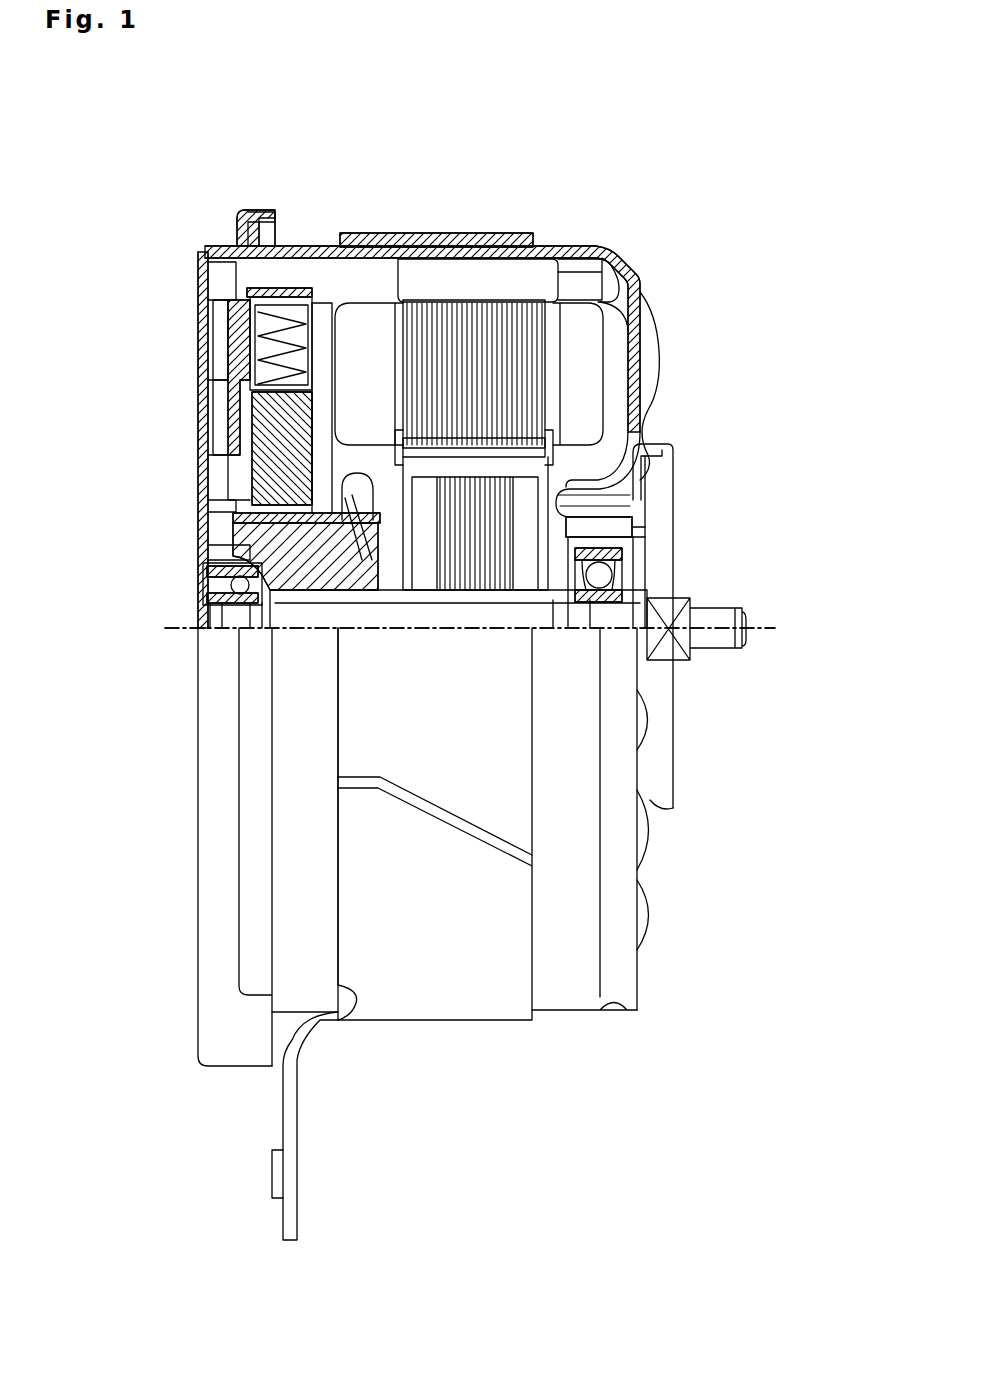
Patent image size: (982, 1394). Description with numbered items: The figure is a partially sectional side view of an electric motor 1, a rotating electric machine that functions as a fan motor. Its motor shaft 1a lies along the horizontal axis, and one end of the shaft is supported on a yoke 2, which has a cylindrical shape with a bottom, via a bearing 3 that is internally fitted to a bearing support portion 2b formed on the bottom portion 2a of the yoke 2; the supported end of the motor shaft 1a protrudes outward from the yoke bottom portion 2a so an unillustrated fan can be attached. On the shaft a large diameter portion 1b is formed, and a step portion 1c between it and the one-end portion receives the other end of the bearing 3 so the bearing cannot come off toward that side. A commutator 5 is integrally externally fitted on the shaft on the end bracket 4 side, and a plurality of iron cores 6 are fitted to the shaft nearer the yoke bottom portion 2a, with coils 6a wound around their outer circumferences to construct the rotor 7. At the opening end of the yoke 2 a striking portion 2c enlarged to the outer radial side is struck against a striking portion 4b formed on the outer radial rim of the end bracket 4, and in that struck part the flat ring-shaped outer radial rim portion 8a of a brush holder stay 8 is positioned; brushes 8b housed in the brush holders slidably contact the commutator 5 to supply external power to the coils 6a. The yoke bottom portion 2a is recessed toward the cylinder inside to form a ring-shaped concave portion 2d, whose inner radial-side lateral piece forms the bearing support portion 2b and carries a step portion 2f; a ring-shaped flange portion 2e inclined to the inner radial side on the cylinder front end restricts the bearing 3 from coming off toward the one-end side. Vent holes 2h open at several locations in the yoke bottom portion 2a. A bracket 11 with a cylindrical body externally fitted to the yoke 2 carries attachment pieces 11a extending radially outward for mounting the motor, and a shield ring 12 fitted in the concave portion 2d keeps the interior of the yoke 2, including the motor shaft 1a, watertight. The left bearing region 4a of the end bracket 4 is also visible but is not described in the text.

The electric motor 1 is at (648, 194).
The motor shaft 1a is at (715, 625).
The large diameter portion 1b is at (457, 605).
The step portion 1c is at (590, 600).
The yoke 2 is at (473, 323).
The bottom portion 2a is at (652, 341).
The bearing support portion 2b is at (600, 527).
The striking portion 2c is at (256, 212).
The concave portion 2d is at (630, 475).
The flange portion 2e is at (590, 550).
The step portion 2f is at (602, 505).
The vent holes 2h is at (653, 840).
The bearing 3 is at (647, 583).
The end bracket 4 is at (194, 246).
The bearing 4a is at (203, 593).
The striking portion 4b is at (240, 228).
The commutator 5 is at (292, 547).
The iron cores 6 is at (461, 323).
The coils 6a is at (612, 300).
The rotor 7 is at (376, 318).
The brush holder stay 8 is at (233, 347).
The outer radial rim portion 8a is at (300, 290).
The brushes 8b is at (277, 435).
The bracket 11 is at (490, 233).
The attachment pieces 11a is at (290, 1175).
The shield ring 12 is at (655, 448).